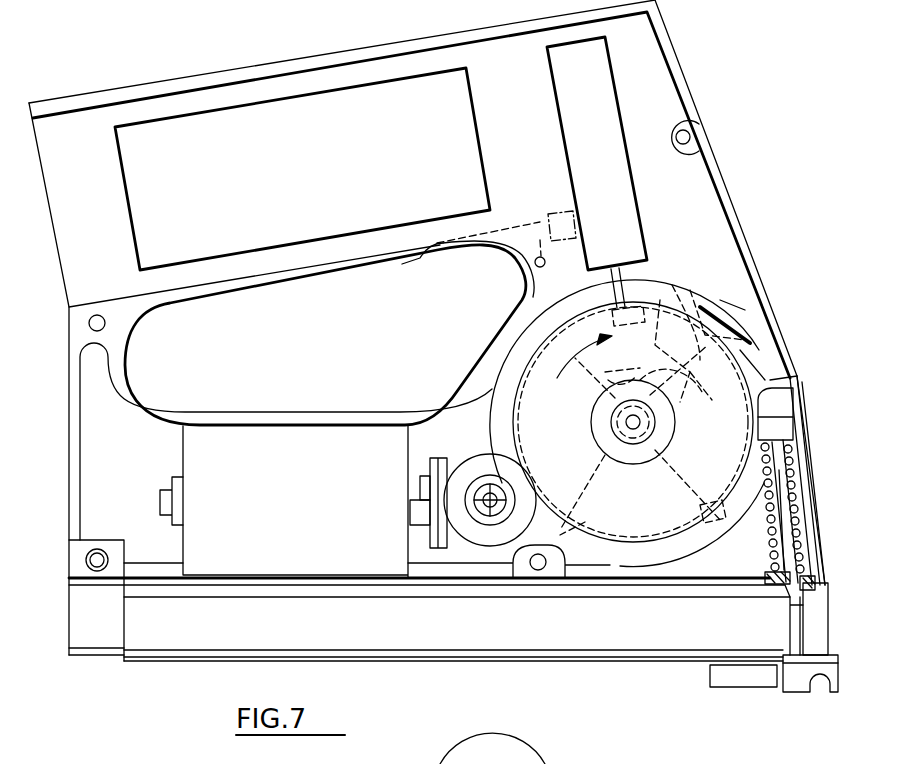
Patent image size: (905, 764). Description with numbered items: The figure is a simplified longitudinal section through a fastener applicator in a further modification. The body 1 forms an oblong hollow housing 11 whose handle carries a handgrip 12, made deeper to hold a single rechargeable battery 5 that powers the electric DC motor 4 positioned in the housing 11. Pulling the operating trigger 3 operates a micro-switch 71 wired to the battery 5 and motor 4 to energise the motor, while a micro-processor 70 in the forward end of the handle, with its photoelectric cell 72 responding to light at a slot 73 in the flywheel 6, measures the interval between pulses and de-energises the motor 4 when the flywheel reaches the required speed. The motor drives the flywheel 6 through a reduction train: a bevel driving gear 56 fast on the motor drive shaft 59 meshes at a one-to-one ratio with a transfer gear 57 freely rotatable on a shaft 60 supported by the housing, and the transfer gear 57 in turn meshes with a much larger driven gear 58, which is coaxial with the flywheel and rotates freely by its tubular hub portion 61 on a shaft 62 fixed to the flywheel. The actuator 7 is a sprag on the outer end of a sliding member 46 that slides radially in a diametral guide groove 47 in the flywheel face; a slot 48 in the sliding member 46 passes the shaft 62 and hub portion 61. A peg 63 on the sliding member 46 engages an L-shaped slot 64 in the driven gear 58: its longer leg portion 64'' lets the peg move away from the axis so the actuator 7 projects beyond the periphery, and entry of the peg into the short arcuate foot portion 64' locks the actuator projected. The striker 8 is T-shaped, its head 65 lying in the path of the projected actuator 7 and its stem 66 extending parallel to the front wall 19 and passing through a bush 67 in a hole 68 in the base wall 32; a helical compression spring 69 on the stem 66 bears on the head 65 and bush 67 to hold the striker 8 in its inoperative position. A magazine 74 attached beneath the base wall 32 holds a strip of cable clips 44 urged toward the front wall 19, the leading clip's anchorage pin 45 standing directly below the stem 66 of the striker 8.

The body 1 is at (703, 101).
The handgrip 12 is at (213, 80).
The housing 11 is at (692, 223).
The battery 5 is at (307, 176).
The micro-processor 70 is at (607, 135).
The micro-switch 71 is at (553, 220).
The photoelectric cell 72 is at (592, 297).
The operating trigger 3 is at (483, 263).
The electric DC motor 4 is at (299, 485).
The base wall 32 is at (690, 588).
The magazine 74 is at (247, 662).
The anchorage pin 45 is at (805, 638).
The cable clips 44 is at (802, 680).
The sliding member 46 is at (783, 382).
The head 65 is at (780, 405).
The front wall 19 is at (795, 424).
The striker 8 is at (800, 456).
The helical compression spring 69 is at (797, 476).
The stem 66 is at (800, 508).
The bush 67 is at (816, 574).
The hole 68 is at (777, 588).
The driven gear 58 is at (632, 548).
The shaft 62 is at (655, 434).
The tubular hub portion 61 is at (648, 454).
The slot 48 is at (683, 424).
The peg 63 is at (700, 392).
The L-shaped slot 64 is at (656, 326).
The flywheel 6 is at (694, 292).
The foot portion 64' is at (756, 295).
The leg portion 64'' is at (598, 373).
The actuator 7 is at (722, 328).
The slot 73 is at (718, 520).
The guide groove 47 is at (585, 522).
The transfer gear 57 is at (493, 536).
The shaft 60 is at (502, 480).
The driving gear 56 is at (438, 544).
The drive shaft 59 is at (430, 520).